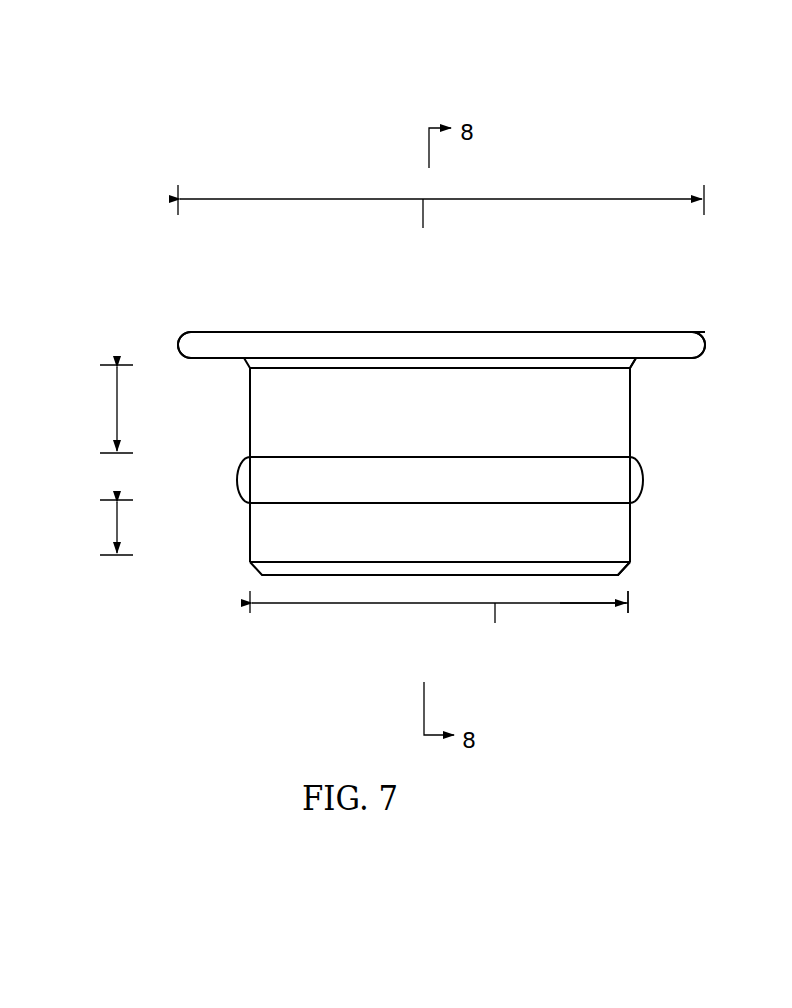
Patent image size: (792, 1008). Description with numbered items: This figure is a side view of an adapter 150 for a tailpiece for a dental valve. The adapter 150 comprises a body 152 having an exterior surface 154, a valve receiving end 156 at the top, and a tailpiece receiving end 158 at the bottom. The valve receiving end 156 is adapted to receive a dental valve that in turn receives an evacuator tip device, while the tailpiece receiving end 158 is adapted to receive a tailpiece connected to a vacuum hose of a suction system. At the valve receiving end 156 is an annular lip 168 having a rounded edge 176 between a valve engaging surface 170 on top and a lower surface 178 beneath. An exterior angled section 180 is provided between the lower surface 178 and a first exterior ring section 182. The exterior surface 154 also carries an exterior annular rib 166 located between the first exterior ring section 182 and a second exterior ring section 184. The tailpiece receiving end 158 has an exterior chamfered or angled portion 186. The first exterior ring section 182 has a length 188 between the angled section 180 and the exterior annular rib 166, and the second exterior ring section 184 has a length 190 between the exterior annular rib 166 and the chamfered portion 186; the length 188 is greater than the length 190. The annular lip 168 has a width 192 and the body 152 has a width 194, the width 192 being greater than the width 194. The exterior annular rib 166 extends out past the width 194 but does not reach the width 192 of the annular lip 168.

The adapter 150 is at (291, 312).
The body 152 is at (221, 552).
The exterior surface 154 is at (296, 411).
The valve receiving end 156 is at (643, 320).
The tailpiece receiving end 158 is at (587, 622).
The exterior annular rib 166 is at (628, 481).
The annular lip 168 is at (212, 318).
The valve engaging surface 170 is at (667, 333).
The rounded edge 176 is at (707, 344).
The lower surface 178 is at (683, 360).
The exterior angled section 180 is at (634, 364).
The first exterior ring section 182 is at (632, 441).
The second exterior ring section 184 is at (632, 527).
The chamfered portion 186 is at (623, 571).
The length 188 is at (120, 408).
The length 190 is at (120, 527).
The width 192 is at (441, 228).
The width 194 is at (439, 625).